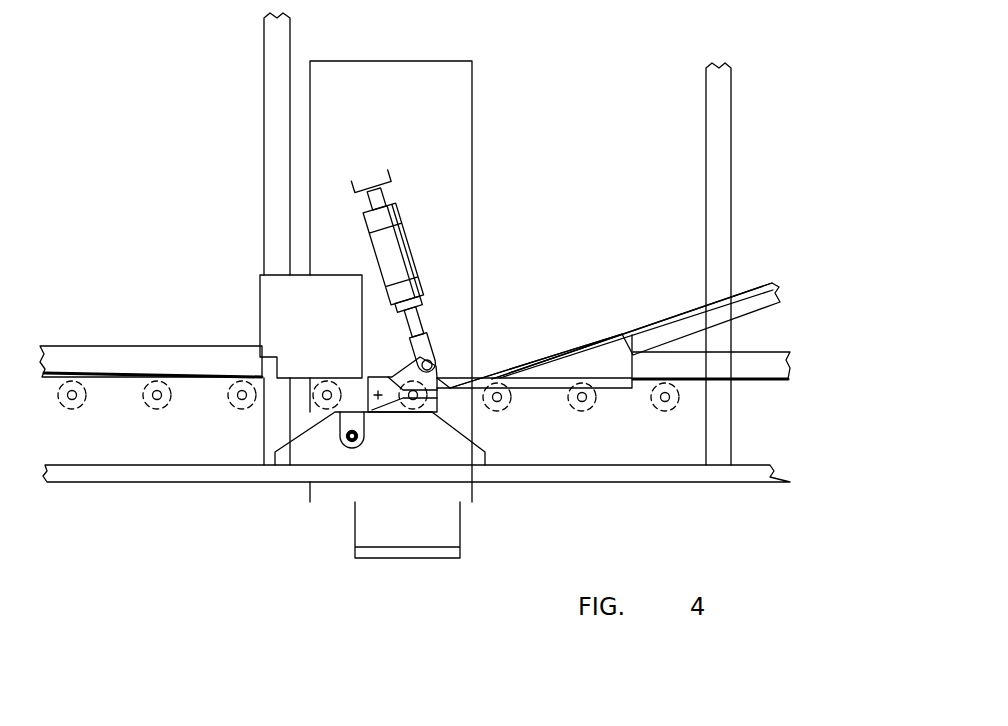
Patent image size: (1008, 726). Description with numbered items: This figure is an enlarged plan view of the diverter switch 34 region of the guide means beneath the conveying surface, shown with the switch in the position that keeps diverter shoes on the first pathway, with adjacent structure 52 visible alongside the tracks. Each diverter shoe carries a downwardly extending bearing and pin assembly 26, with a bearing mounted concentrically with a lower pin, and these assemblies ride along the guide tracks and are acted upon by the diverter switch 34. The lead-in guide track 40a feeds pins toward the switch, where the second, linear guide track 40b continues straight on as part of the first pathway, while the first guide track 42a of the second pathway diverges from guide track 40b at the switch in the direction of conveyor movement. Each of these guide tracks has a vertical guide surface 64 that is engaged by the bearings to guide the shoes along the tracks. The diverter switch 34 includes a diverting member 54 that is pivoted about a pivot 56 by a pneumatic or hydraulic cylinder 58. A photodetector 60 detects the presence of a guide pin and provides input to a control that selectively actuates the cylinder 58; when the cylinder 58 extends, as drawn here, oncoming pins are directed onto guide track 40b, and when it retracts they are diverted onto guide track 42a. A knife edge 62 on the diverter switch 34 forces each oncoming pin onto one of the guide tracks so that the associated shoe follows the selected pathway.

The bearing and pin assembly 26 is at (73, 411).
The diverter switch 34 is at (460, 525).
The lead-in guide track 40a is at (107, 352).
The second, linear guide track 40b is at (790, 372).
The first guide track 42a is at (775, 288).
The vertical support post 52 is at (267, 125).
The diverting member 54 is at (432, 368).
The pivot 56 is at (378, 393).
The pneumatic or hydraulic cylinder 58 is at (413, 260).
The photodetector 60 is at (353, 446).
The knife edge 62 is at (450, 388).
The vertical guide surface 64 is at (112, 378).